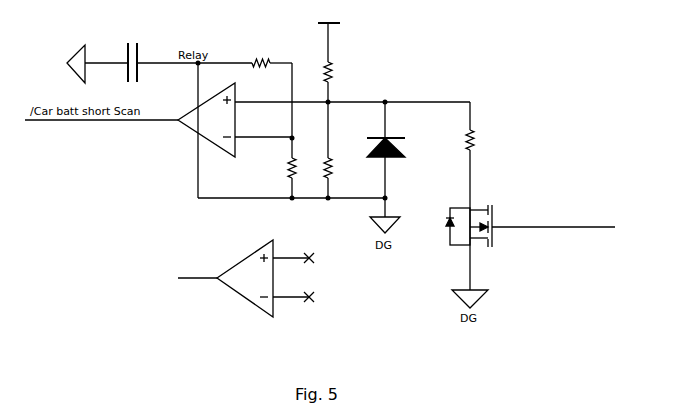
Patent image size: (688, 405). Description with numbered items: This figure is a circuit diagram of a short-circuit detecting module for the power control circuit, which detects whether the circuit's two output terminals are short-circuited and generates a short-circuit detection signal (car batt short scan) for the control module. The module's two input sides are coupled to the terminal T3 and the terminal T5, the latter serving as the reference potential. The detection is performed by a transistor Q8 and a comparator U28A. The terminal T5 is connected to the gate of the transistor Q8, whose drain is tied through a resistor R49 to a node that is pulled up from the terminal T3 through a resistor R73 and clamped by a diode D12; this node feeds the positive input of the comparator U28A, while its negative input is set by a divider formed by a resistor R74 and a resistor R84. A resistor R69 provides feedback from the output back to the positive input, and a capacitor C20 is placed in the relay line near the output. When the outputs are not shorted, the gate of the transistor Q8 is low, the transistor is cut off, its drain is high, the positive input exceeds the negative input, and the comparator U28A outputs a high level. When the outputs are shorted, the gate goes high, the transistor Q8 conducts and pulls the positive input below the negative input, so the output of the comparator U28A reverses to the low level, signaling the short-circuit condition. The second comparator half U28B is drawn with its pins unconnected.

The capacitor 104P C20 is at (160, 60).
The resistor 103 R69 is at (245, 91).
The resistor 103 R73 is at (340, 82).
The resistor 123 R74 is at (304, 168).
The resistor 103 R84 is at (341, 150).
The resistor 472 R49 is at (482, 155).
The diode 1N4148 D12 is at (409, 159).
The transistor Q8 is at (495, 238).
The comparator U28A is at (199, 130).
The comparator LM393 (B) U28B is at (247, 281).
The terminal T3 is at (341, 40).
The terminal T5 is at (553, 217).